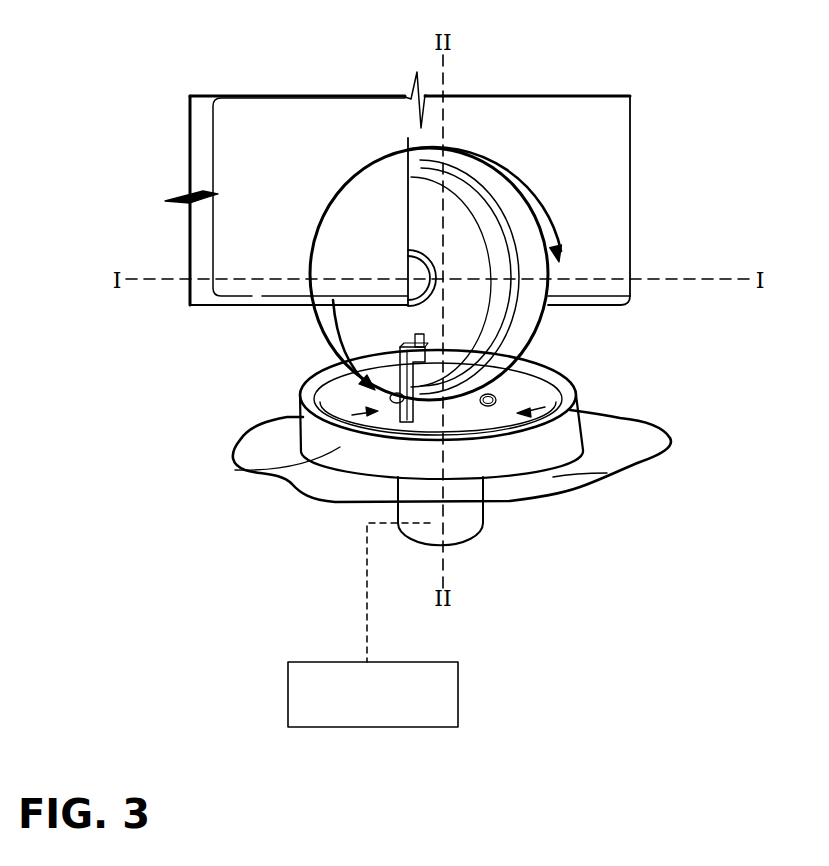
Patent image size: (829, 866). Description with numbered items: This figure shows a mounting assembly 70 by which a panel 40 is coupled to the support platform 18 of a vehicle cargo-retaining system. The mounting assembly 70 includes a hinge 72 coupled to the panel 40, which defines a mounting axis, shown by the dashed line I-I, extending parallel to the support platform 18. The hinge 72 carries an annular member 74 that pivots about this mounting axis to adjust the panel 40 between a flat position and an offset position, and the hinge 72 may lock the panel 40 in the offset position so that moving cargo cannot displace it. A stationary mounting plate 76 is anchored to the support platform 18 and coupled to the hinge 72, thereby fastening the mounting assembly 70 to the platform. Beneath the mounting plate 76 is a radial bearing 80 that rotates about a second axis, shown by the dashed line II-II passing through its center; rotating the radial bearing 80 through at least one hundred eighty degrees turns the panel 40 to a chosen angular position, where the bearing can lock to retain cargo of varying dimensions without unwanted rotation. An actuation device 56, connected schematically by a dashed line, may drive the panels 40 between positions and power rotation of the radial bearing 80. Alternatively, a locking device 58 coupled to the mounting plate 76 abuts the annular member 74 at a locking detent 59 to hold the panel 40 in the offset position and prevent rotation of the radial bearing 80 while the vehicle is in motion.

The support platform 18 is at (607, 473).
The panel 40 is at (592, 152).
The actuation device 56 is at (323, 660).
The locking device 58 is at (340, 360).
The locking detent 59 is at (435, 333).
The mounting assembly 70 is at (293, 353).
The hinge 72 is at (567, 321).
The annular member 74 is at (473, 268).
The stationary mounting plate 76 is at (282, 473).
The radial bearing 80 is at (457, 513).